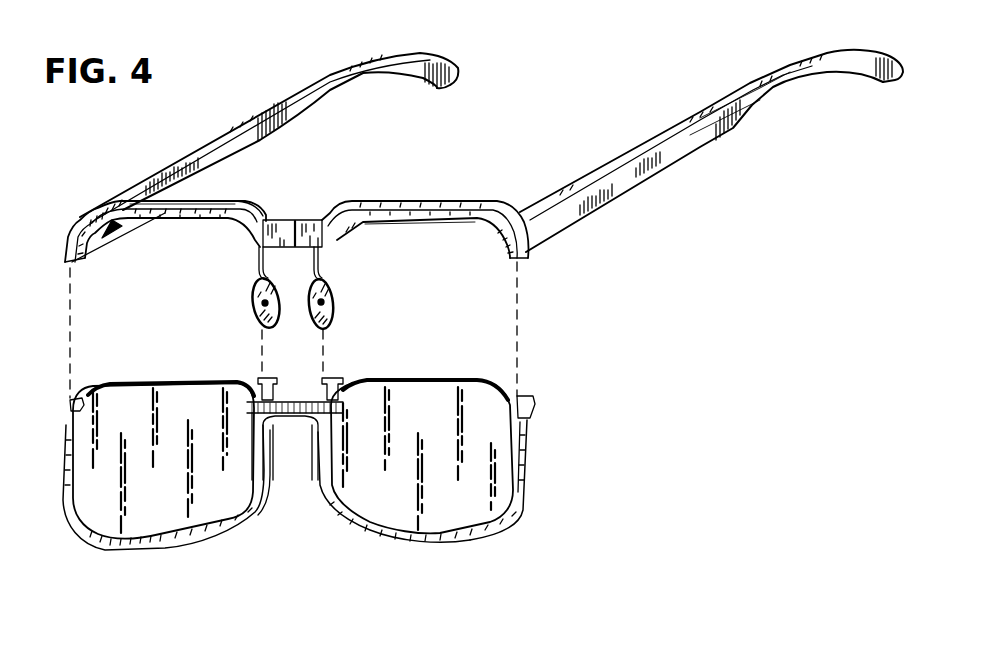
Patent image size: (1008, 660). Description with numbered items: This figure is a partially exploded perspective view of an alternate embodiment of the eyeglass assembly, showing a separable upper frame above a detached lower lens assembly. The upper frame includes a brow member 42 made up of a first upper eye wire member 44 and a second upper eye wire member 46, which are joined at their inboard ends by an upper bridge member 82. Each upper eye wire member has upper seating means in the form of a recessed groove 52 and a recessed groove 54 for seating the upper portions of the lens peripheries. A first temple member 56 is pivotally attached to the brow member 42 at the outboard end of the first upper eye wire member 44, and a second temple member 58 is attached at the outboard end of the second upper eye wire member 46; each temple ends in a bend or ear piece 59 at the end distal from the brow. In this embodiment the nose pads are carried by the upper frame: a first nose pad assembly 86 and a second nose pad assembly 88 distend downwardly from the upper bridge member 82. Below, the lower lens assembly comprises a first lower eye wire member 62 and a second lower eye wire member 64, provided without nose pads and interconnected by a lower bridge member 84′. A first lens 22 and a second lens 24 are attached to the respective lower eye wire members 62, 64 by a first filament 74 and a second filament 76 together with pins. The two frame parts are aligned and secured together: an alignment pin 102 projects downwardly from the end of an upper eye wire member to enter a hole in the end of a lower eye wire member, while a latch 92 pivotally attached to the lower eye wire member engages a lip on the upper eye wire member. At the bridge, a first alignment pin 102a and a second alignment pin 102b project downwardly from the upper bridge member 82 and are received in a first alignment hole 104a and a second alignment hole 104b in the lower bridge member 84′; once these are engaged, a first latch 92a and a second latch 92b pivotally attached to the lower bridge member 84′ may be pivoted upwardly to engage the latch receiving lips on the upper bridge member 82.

The first lens 22 is at (110, 490).
The second lens 24 is at (472, 468).
The brow member 42 is at (250, 201).
The first upper eye wire member 44 is at (182, 200).
The second upper eye wire member 46 is at (445, 204).
The recessed groove 52 is at (102, 233).
The recessed groove 54 is at (343, 237).
The first temple member 56 is at (205, 175).
The second temple member 58 is at (590, 202).
The ear piece 59 is at (773, 82).
The first lower eye wire member 62 is at (145, 547).
The second lower eye wire member 64 is at (422, 537).
The first filament 74 is at (135, 380).
The second filament 76 is at (433, 378).
The upper bridge member 82 is at (297, 220).
The lower bridge member 84′ is at (290, 420).
The first nose pad assembly 86 is at (253, 312).
The second nose pad assembly 88 is at (333, 308).
The latch 92 is at (78, 396).
The first latch 92a is at (257, 380).
The second latch 92b is at (340, 380).
The alignment pin 102 is at (72, 268).
The first alignment pin 102a is at (255, 253).
The second alignment pin 102b is at (322, 255).
The first alignment hole 104a is at (272, 400).
The second alignment hole 104b is at (327, 385).